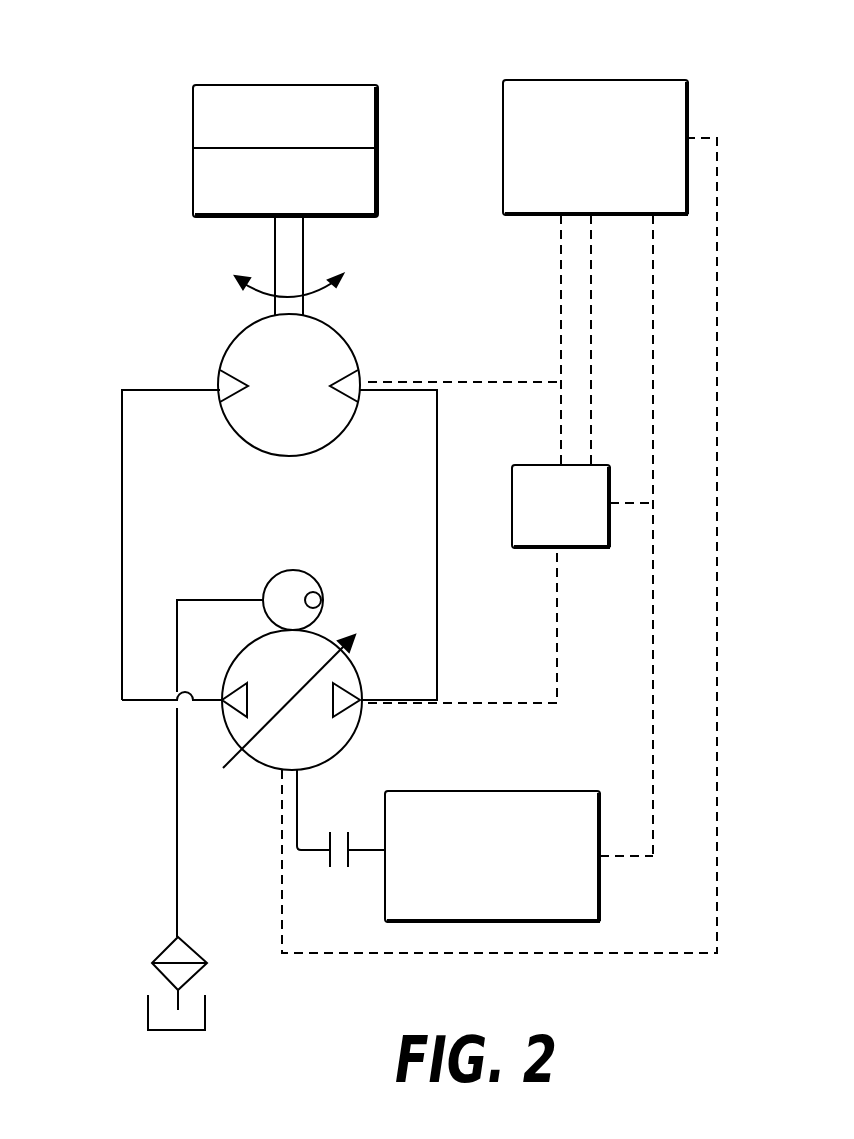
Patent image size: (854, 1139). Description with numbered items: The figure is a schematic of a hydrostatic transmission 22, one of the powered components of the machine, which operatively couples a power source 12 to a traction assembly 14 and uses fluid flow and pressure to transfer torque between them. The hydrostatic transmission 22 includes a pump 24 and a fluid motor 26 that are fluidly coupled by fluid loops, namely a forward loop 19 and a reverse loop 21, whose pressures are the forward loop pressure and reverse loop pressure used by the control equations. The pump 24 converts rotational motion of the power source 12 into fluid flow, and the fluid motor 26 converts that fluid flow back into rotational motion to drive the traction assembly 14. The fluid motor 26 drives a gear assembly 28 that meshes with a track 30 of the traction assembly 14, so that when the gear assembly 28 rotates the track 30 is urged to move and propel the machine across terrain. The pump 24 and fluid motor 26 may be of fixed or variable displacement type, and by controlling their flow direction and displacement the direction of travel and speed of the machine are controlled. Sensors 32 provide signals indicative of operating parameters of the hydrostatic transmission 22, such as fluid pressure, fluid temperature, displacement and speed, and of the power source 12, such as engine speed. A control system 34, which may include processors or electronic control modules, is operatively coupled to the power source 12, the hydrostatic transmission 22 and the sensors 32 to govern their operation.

The power source 12 is at (507, 870).
The traction assembly 14 is at (285, 112).
The forward loop 19 is at (120, 476).
The reverse loop 21 is at (437, 478).
The hydrostatic transmission 22 is at (135, 767).
The pump 24 is at (264, 770).
The fluid motor 26 is at (232, 348).
The gear assembly 28 is at (299, 202).
The track 30 is at (299, 132).
The sensors 32 is at (574, 522).
The control system 34 is at (609, 162).